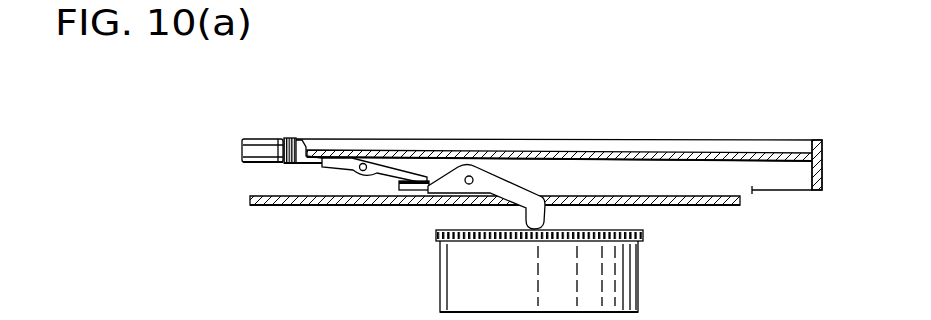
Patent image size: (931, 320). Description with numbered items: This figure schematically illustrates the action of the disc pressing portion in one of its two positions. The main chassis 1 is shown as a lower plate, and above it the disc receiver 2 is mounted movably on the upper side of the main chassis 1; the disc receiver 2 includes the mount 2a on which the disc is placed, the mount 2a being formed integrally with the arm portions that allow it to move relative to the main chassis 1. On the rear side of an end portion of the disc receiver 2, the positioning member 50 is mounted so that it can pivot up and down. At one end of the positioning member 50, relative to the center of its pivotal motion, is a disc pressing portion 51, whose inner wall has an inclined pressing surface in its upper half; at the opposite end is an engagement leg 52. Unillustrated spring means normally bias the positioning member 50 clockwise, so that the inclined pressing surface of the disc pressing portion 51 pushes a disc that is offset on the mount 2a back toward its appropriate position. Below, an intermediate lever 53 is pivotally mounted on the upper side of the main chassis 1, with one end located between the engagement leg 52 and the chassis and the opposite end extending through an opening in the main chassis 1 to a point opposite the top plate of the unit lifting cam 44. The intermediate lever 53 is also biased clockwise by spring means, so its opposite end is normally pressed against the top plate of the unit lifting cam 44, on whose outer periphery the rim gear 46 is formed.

The main chassis 1 is at (308, 206).
The disc receiver 2 is at (559, 140).
The mount 2a is at (455, 152).
The unit lifting cam 44 is at (648, 278).
The rim gear 46 is at (643, 232).
The positioning member 50 is at (372, 166).
The disc pressing portion 51 is at (288, 143).
The engagement leg 52 is at (412, 174).
The intermediate lever 53 is at (510, 207).